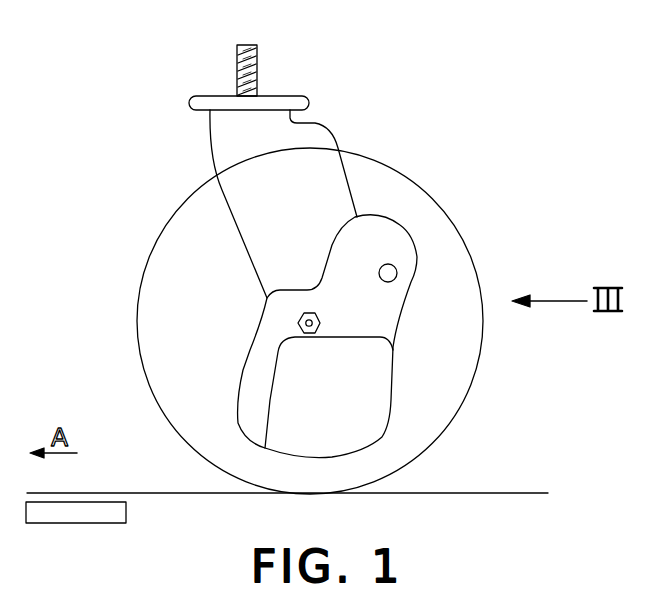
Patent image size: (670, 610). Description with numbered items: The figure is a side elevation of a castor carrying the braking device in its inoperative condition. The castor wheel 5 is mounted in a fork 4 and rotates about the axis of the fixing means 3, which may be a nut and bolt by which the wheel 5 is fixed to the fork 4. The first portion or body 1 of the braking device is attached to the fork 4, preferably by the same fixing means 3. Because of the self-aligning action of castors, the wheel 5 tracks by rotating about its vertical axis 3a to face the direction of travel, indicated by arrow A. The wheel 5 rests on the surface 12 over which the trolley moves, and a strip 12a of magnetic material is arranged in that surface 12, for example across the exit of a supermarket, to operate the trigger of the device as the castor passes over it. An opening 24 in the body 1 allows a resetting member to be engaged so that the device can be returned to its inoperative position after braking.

The first portion or body 1 is at (253, 360).
The fixing means 3 is at (310, 334).
The vertical axis 3a is at (247, 14).
The fork 4 is at (318, 150).
The castor wheel 5 is at (460, 362).
The surface 12 is at (470, 493).
The strip of magnetic material 12a is at (68, 516).
The opening 24 is at (394, 268).